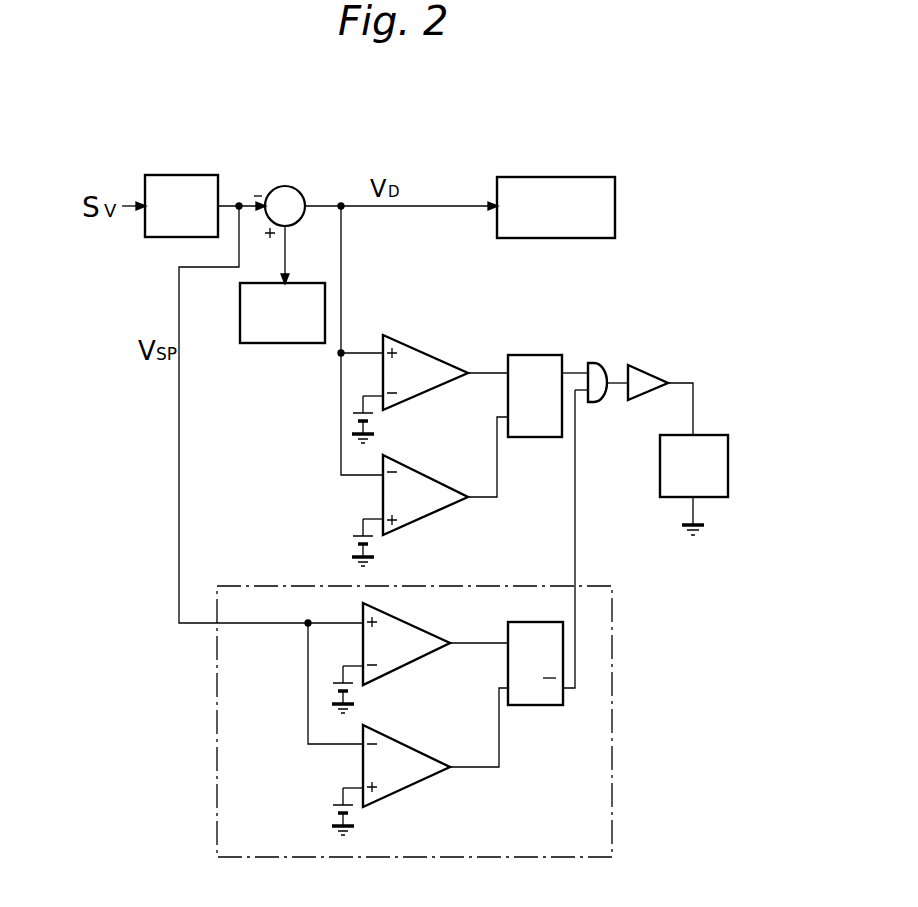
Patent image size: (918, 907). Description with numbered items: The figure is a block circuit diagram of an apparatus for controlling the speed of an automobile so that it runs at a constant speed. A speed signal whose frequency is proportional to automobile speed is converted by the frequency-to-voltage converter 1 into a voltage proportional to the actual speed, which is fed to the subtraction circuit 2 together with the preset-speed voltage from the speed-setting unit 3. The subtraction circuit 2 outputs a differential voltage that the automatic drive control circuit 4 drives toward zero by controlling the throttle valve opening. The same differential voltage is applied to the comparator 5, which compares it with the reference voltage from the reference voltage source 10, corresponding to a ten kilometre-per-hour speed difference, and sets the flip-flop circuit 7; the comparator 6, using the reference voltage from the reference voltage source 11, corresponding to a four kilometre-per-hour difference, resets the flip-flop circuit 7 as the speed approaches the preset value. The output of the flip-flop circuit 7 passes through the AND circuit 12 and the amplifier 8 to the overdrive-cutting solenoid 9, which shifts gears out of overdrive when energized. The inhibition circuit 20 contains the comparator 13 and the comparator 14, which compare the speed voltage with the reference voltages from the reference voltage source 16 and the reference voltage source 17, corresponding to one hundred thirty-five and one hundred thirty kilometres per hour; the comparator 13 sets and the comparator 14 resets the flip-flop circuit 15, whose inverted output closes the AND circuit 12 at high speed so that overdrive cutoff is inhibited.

The frequency-to-voltage converter 1 is at (186, 175).
The subtraction circuit 2 is at (296, 190).
The speed-setting unit 3 is at (285, 343).
The automatic drive control circuit 4 is at (552, 177).
The comparator 5 is at (427, 354).
The comparator 6 is at (435, 512).
The flip-flop circuit 7 is at (535, 355).
The amplifier 8 is at (650, 375).
The overdrive-cutting solenoid 9 is at (660, 474).
The reference voltage source 10 is at (352, 422).
The reference voltage source 11 is at (353, 540).
The AND circuit 12 is at (598, 402).
The comparator 13 is at (400, 620).
The comparator 14 is at (410, 785).
The flip-flop circuit 15 is at (518, 622).
The reference voltage source 16 is at (335, 688).
The reference voltage source 17 is at (332, 808).
The inhibition circuit 20 is at (612, 733).